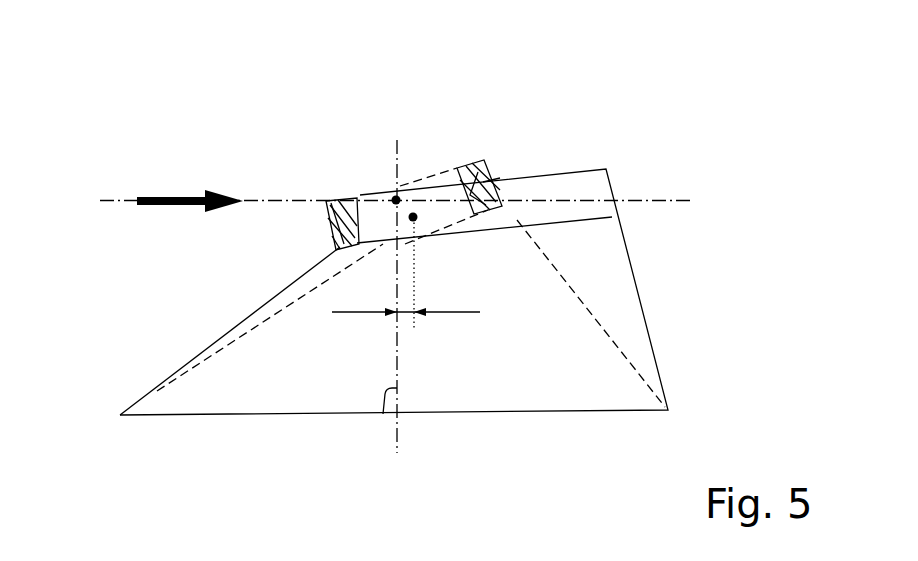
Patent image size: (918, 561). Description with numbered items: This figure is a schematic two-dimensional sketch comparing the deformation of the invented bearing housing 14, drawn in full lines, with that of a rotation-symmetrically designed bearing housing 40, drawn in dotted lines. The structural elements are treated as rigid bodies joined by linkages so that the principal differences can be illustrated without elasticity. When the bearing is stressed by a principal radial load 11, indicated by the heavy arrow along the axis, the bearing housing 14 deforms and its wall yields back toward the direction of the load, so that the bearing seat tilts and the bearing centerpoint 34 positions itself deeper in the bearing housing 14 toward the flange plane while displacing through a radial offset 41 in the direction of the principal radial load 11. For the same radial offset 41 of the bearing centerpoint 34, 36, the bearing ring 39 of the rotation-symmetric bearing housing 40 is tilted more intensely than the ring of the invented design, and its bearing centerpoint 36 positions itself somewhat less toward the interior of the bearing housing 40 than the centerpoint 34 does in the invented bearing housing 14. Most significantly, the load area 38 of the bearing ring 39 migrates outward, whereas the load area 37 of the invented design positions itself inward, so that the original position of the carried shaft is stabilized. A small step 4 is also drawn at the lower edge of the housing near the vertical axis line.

The principal radial load 11 is at (153, 193).
The bearing centerpoint 34 is at (393, 197).
The bearing centerpoint 36 is at (396, 198).
The load area 37 is at (460, 192).
The load area 38 is at (485, 162).
The bearing ring 39 is at (483, 182).
The bearing housing 14 is at (658, 248).
The rotation-symmetrically designed bearing housing 40 is at (610, 298).
The reference notch 4 is at (383, 410).
The radial offset 41 is at (406, 313).